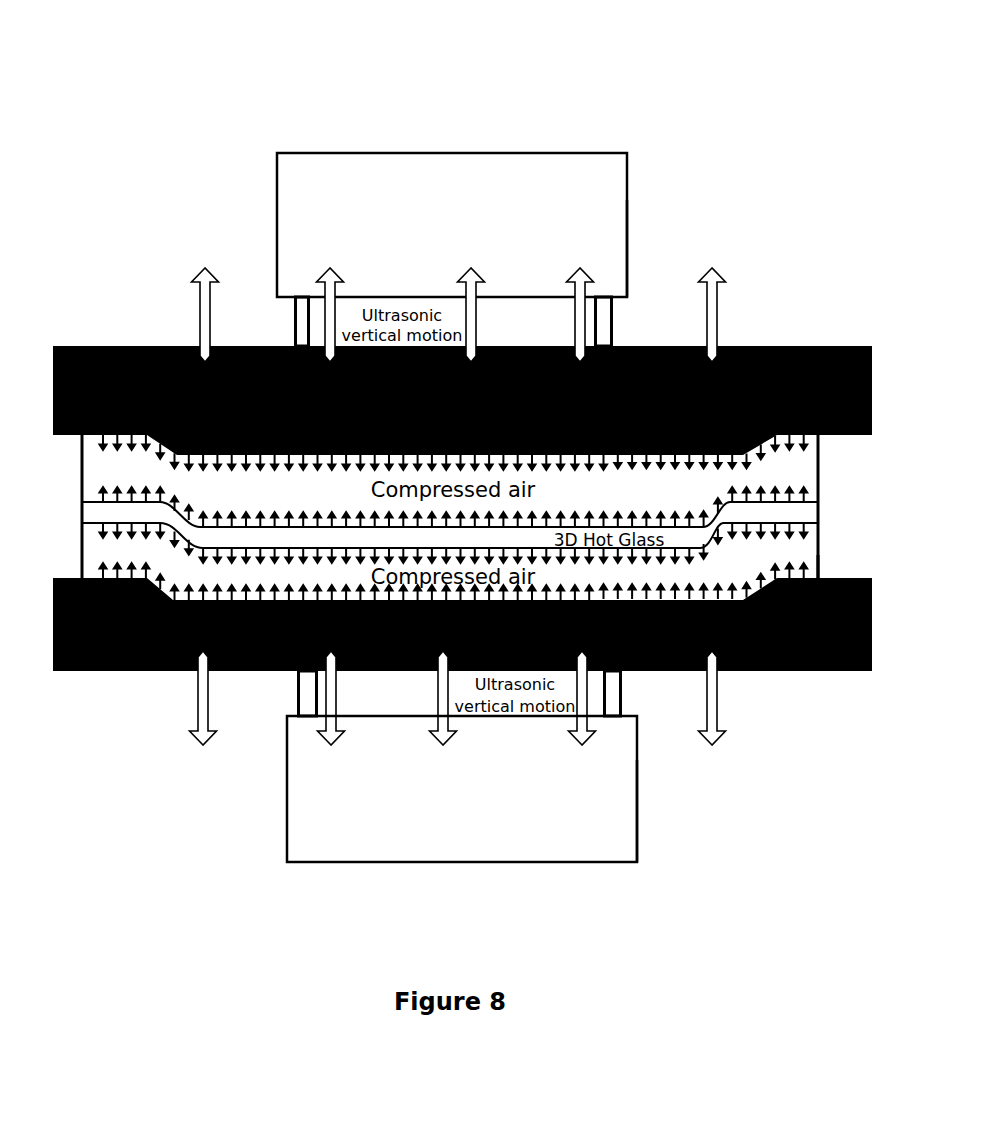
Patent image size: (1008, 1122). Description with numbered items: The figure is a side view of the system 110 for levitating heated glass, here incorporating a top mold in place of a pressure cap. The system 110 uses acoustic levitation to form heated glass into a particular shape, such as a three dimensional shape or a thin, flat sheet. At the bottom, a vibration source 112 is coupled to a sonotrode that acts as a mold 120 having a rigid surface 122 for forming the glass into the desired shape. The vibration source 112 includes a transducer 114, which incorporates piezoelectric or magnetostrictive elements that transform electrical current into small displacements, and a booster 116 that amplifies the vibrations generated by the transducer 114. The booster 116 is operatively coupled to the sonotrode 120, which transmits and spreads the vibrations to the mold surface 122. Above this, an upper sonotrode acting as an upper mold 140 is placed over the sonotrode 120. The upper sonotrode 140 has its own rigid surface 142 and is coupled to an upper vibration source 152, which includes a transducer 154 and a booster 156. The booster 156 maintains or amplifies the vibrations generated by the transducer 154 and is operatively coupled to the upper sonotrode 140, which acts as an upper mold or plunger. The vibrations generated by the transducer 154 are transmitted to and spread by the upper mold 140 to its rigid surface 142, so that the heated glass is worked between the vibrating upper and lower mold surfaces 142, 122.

The system 110 is at (452, 90).
The vibration source 152 is at (630, 190).
The transducer 154 is at (597, 238).
The booster 156 is at (605, 323).
The upper sonotrode 140 is at (787, 346).
The rigid surface 142 is at (825, 437).
The rigid surface 122 is at (818, 580).
The sonotrode 120 is at (782, 672).
The booster 116 is at (613, 693).
The vibration source 112 is at (642, 740).
The transducer 114 is at (627, 828).